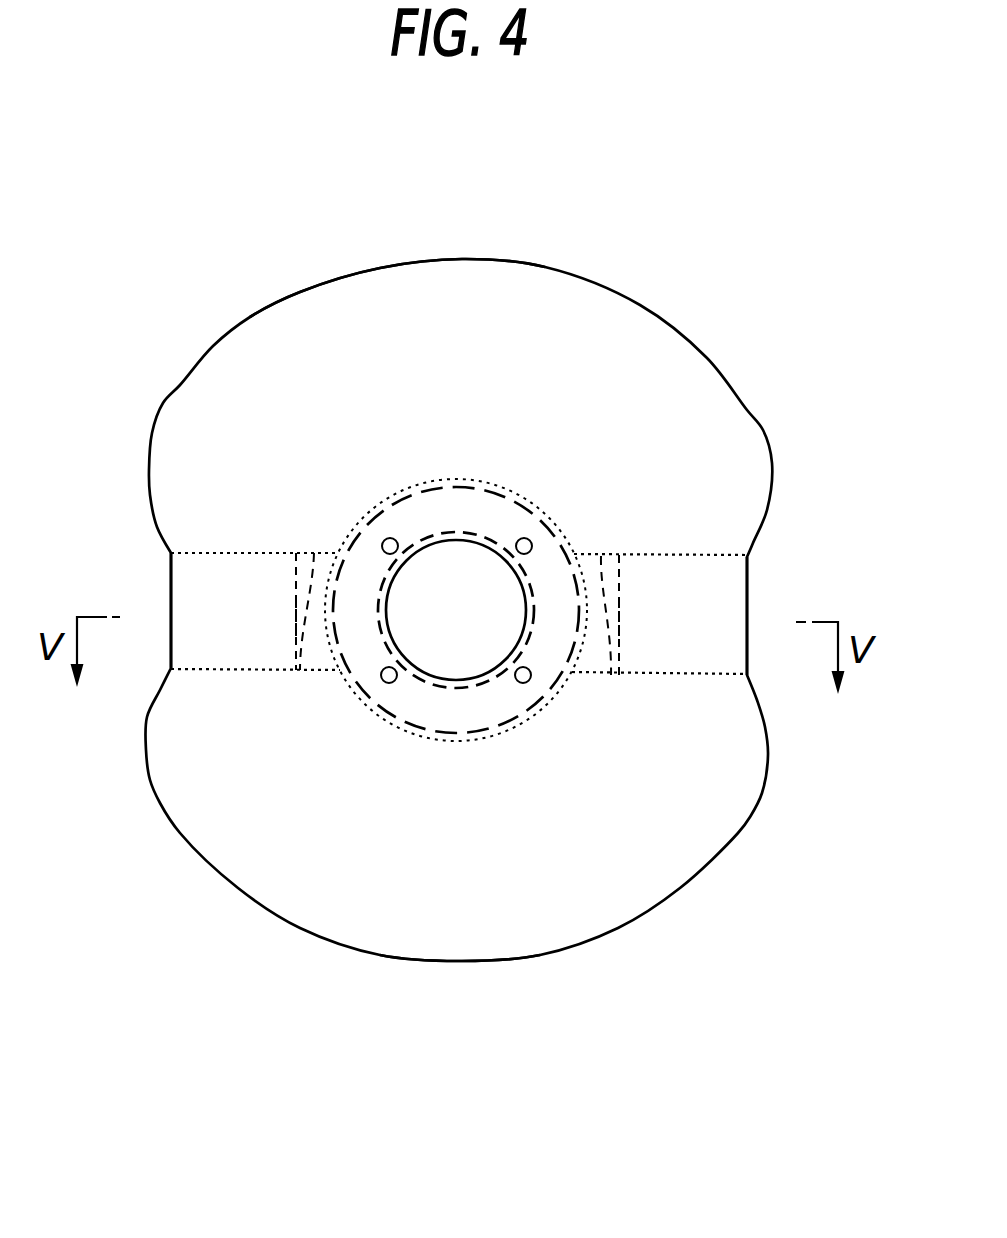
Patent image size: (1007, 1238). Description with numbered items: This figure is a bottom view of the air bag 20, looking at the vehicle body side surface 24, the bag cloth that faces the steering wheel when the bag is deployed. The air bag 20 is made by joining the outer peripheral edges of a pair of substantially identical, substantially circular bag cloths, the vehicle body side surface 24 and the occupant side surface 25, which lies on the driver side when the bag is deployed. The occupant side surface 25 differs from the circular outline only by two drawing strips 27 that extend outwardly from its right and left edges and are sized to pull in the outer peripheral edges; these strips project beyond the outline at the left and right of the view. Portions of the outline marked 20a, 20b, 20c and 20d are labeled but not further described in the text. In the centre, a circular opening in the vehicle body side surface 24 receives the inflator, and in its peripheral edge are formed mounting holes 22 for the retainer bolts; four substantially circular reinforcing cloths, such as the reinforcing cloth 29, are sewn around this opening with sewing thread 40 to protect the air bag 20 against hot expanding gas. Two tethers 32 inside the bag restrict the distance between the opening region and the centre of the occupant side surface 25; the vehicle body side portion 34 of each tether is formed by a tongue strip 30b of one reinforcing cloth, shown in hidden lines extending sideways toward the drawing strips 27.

The air bag 20 is at (206, 268).
The first side of flange 20a is at (766, 603).
The second side of flange 20b is at (152, 588).
The upper end of flange 20c is at (490, 253).
The lower end of flange 20d is at (529, 970).
The mounting hole 22 is at (391, 538).
The vehicle body side surface 24 is at (338, 300).
The occupant side surface 25 is at (398, 282).
The drawing strip 27 is at (193, 578).
The reinforcing cloth 29 is at (469, 742).
The tongue strip 30b is at (314, 553).
The tether 32 is at (296, 670).
The vehicle body side portion 34 is at (453, 693).
The sewing thread 40 is at (450, 530).